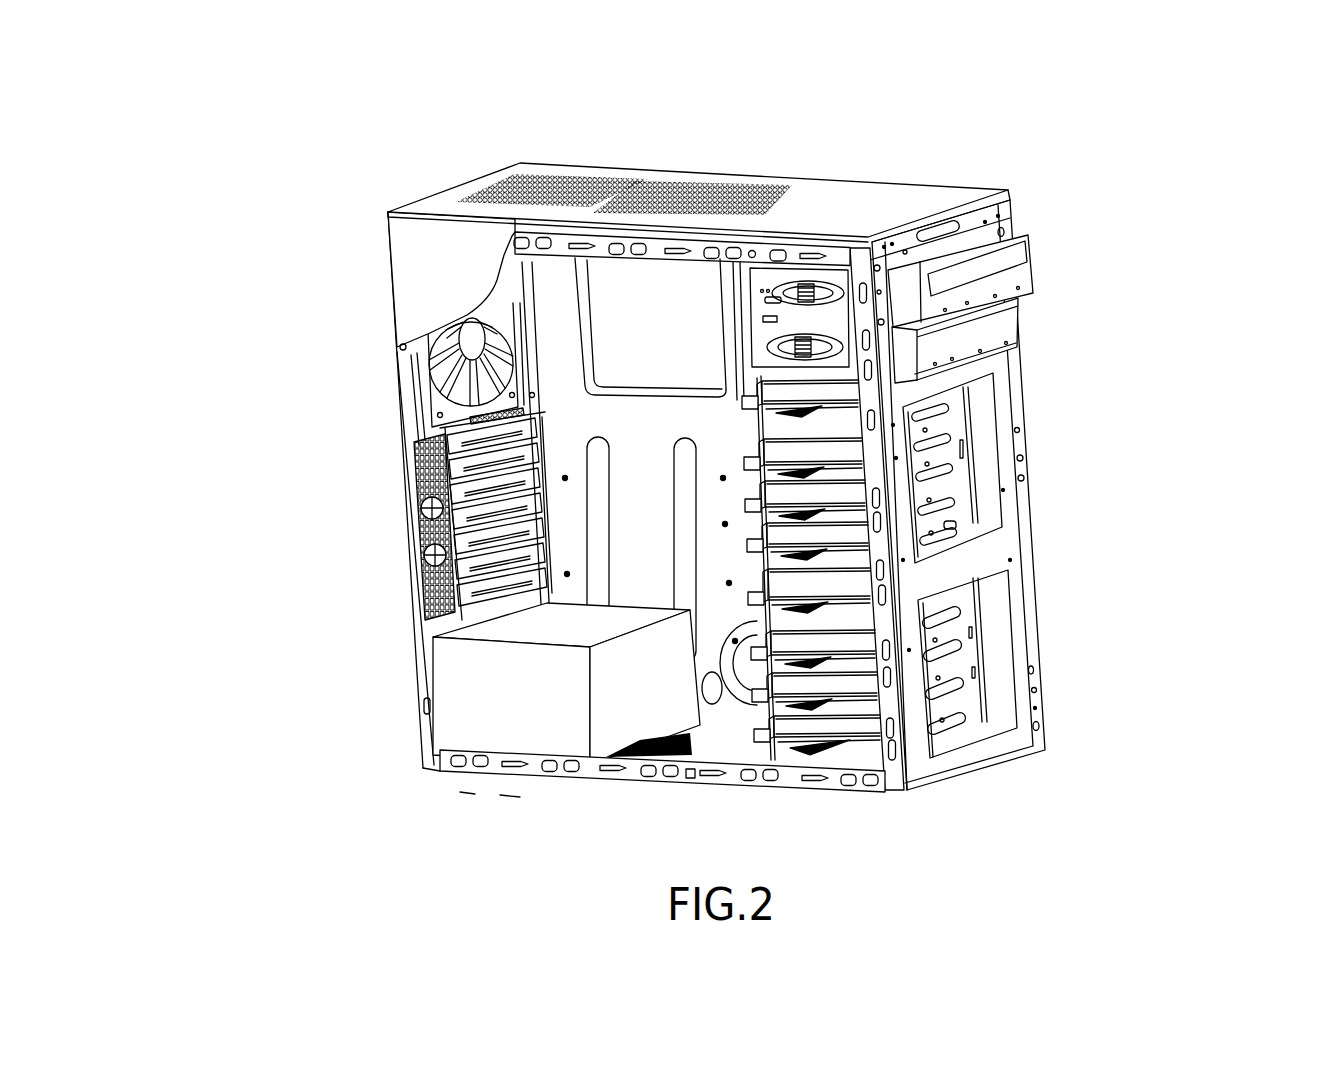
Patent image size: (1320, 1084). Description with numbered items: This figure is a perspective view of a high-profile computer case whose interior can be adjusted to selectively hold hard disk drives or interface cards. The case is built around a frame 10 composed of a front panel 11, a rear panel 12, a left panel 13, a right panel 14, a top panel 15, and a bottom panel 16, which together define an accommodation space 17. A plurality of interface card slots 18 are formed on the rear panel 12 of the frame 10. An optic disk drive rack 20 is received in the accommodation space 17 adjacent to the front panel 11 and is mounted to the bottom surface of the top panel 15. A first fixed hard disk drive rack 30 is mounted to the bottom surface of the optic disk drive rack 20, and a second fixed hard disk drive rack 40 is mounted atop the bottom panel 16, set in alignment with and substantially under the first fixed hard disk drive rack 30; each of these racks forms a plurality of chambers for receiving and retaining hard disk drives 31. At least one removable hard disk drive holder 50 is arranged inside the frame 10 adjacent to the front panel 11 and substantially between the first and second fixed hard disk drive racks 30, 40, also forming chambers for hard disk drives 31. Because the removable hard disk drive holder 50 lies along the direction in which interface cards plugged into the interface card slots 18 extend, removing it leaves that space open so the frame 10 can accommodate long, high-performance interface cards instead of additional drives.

The frame 10 is at (397, 488).
The front panel 11 is at (1003, 383).
The rear panel 12 is at (420, 425).
The left panel 13 is at (445, 256).
The right panel 14 is at (660, 398).
The top panel 15 is at (892, 203).
The bottom panel 16 is at (717, 748).
The accommodation space 17 is at (637, 538).
The interface card slots 18 is at (408, 549).
The optic disk drive rack 20 is at (800, 318).
The first fixed hard disk drive rack 30 is at (947, 423).
The hard disk drives 31 is at (835, 433).
The second fixed hard disk drive rack 40 is at (970, 653).
The removable hard disk drive holder 50 is at (950, 527).